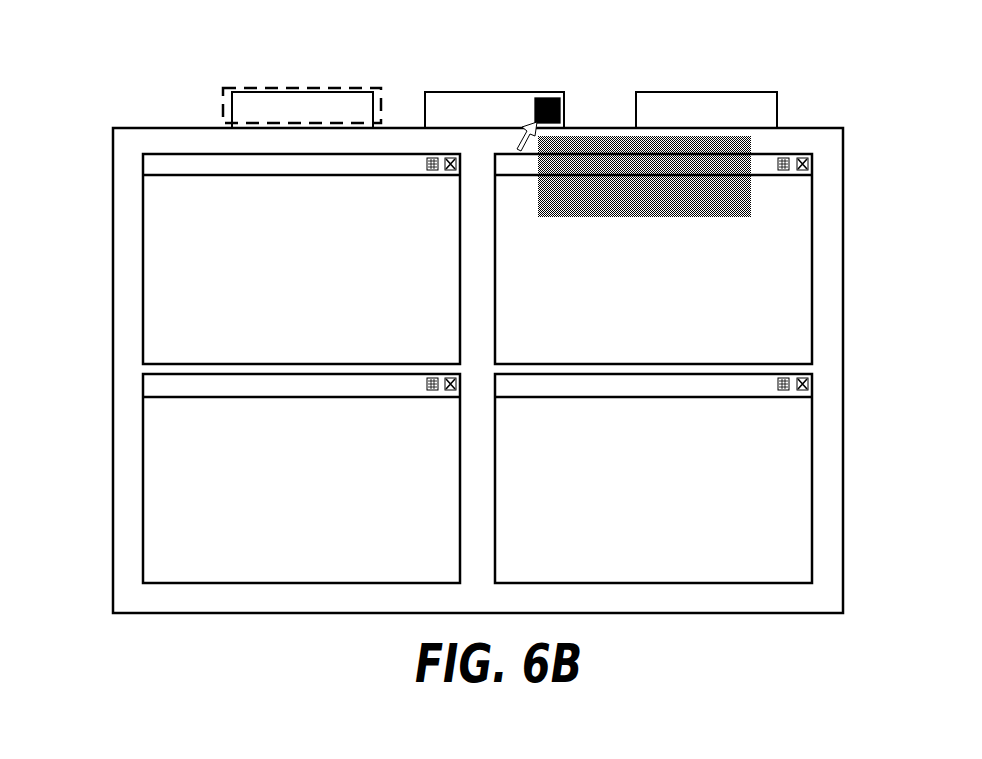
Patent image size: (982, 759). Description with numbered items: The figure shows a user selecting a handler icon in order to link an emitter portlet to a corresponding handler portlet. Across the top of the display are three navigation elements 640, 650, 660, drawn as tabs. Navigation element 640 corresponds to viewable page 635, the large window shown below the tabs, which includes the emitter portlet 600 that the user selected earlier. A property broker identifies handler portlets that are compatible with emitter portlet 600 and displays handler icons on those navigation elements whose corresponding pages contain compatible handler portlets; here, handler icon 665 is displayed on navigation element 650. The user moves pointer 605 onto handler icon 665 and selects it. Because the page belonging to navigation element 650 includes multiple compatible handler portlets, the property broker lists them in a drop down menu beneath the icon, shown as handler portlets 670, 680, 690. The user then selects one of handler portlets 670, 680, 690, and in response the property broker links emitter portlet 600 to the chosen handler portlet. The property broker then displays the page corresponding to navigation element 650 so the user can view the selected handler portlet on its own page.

The emitter portlet 600 is at (256, 478).
The pointer 605 is at (493, 138).
The viewable page 635 is at (439, 370).
The navigation element 640 is at (287, 85).
The navigation element 650 is at (468, 87).
The navigation element 660 is at (706, 88).
The handler icon 665 is at (577, 77).
The handler portlet 670 is at (721, 185).
The handler portlet 680 is at (721, 210).
The handler portlet 690 is at (720, 235).